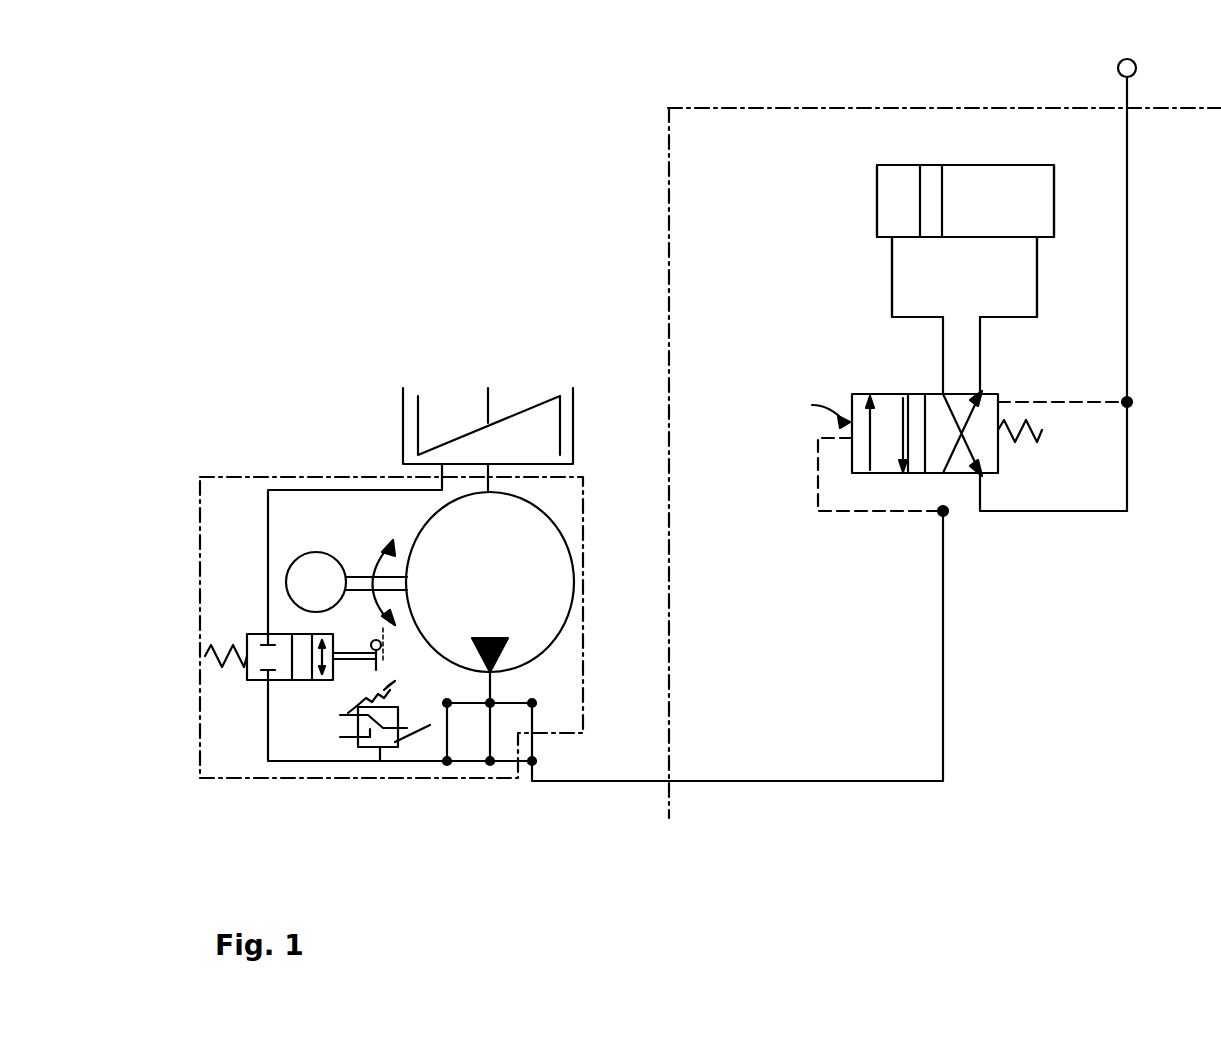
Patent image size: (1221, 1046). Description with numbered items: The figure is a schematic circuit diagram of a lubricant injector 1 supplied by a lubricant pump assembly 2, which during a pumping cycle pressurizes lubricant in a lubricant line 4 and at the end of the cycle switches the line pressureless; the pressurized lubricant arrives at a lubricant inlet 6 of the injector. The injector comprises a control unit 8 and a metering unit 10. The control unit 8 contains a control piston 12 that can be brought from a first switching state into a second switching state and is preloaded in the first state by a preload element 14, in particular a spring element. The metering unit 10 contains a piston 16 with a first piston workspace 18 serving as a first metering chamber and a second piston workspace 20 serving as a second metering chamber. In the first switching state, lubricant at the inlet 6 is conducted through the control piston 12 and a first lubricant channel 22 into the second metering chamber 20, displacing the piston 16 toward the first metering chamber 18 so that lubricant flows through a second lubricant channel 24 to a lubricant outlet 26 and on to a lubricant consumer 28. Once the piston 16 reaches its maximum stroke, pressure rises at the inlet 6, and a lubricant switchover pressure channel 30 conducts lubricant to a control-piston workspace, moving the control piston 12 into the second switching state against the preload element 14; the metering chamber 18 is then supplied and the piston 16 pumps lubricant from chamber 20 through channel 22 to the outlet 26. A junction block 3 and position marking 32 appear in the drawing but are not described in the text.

The lubricant injector 1 is at (972, 93).
The lubricant pump assembly 2 is at (396, 337).
The manifold block 3 is at (489, 720).
The lubricant line 4 is at (805, 785).
The lubricant inlet 6 is at (946, 514).
The control unit 8 is at (1085, 447).
The metering unit 10 is at (1073, 190).
The control piston 12 is at (995, 462).
The preload element 14 is at (1015, 420).
The piston 16 is at (933, 178).
The first piston workspace 18 is at (887, 195).
The second piston workspace 20 is at (1044, 170).
The first lubricant channel 22 is at (1038, 270).
The second lubricant channel 24 is at (892, 283).
The lubricant outlet 26 is at (1025, 513).
The lubricant consumer 28 is at (1135, 50).
The lubricant switchover pressure channel 30 is at (852, 513).
The second switching position 32 is at (821, 407).